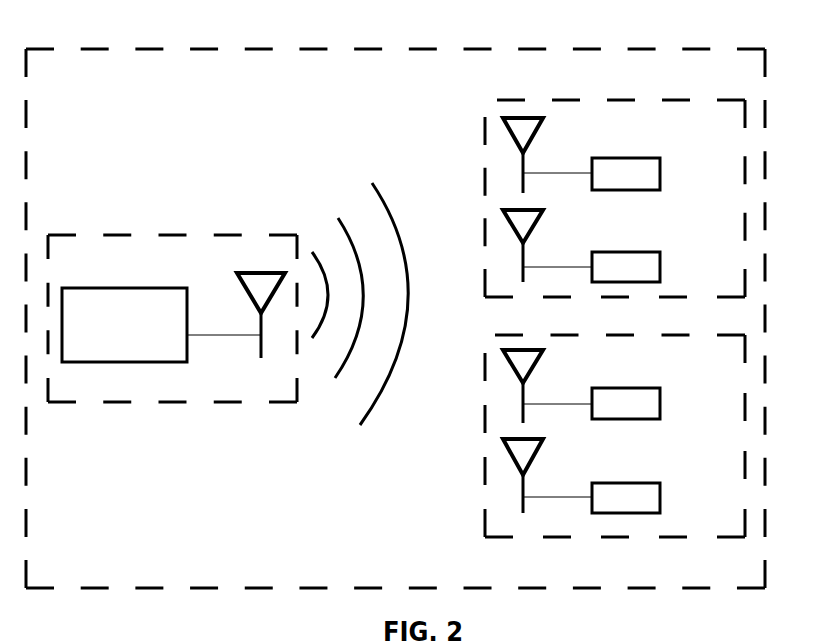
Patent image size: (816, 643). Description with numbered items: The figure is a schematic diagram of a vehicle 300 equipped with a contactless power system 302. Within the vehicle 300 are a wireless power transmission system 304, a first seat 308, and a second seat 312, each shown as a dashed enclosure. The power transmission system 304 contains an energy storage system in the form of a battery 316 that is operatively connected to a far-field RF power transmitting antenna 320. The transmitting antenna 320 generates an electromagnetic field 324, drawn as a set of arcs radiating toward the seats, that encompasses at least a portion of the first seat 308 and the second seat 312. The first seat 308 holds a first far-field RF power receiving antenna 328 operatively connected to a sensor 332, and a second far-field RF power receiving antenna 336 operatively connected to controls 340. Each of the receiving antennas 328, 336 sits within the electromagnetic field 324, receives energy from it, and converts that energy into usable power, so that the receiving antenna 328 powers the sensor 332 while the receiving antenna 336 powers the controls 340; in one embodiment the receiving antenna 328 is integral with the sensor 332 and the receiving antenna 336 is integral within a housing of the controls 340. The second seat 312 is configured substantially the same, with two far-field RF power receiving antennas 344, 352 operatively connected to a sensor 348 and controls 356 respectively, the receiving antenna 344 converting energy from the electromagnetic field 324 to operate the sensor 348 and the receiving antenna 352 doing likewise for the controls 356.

The vehicle 300 is at (653, 48).
The contactless power system 302 is at (329, 490).
The wireless power transmission system 304 is at (98, 403).
The first seat 308 is at (508, 100).
The second seat 312 is at (492, 538).
The battery 316 is at (152, 288).
The far-field RF power transmitting antenna 320 is at (268, 272).
The electromagnetic field 324 is at (326, 205).
The first far-field RF power receiving antenna 328 is at (542, 121).
The sensor 332 is at (652, 158).
The second far-field RF power receiving antenna 336 is at (542, 212).
The controls 340 is at (652, 252).
The far-field RF power receiving antenna 344 is at (542, 352).
The sensor 348 is at (652, 388).
The far-field RF power receiving antenna 352 is at (542, 441).
The controls 356 is at (652, 483).